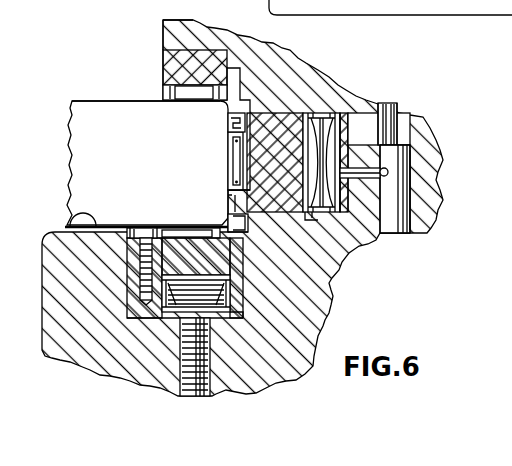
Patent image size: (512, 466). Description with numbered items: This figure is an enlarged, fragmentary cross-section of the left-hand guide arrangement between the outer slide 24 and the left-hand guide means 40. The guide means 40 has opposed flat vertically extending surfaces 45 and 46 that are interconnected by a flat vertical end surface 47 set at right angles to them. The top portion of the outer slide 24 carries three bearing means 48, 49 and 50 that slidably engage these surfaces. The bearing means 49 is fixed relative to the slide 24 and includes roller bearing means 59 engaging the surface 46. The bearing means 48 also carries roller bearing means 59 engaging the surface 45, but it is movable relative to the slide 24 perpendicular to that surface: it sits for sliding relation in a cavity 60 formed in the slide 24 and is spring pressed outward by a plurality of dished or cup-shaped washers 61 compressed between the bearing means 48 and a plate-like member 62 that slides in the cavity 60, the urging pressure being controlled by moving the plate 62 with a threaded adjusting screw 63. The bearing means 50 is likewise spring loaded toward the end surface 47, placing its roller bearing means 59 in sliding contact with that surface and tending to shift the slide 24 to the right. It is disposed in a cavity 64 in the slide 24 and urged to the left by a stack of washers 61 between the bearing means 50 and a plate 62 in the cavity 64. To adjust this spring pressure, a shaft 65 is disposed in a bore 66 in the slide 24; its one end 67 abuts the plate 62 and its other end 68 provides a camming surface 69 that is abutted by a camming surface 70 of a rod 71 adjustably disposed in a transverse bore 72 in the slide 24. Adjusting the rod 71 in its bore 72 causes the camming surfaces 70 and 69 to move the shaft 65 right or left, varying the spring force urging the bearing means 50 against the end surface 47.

The outer slide 24 is at (486, 0).
The left-hand guide means 40 is at (90, 153).
The flat vertically extending surface 45 is at (72, 214).
The flat vertically extending surface 46 is at (102, 100).
The flat vertical end surface 47 is at (230, 123).
The bearing means 48 is at (244, 264).
The bearing means 49 is at (192, 57).
The bearing means 50 is at (290, 120).
The roller bearing means 59 is at (173, 90).
The cavity 60 is at (232, 299).
The dished or cup-shaped washers 61 is at (150, 302).
The plate-like member 62 is at (336, 212).
The threaded adjusting screw 63 is at (187, 340).
The cavity 64 is at (324, 112).
The shaft 65 is at (396, 146).
The bore 66 is at (378, 155).
The end of shaft 67 is at (353, 167).
The other end of shaft 68 is at (413, 157).
The camming surface 69 is at (390, 171).
The camming surface 70 is at (390, 173).
The rod 71 is at (399, 220).
The transverse bore 72 is at (388, 238).